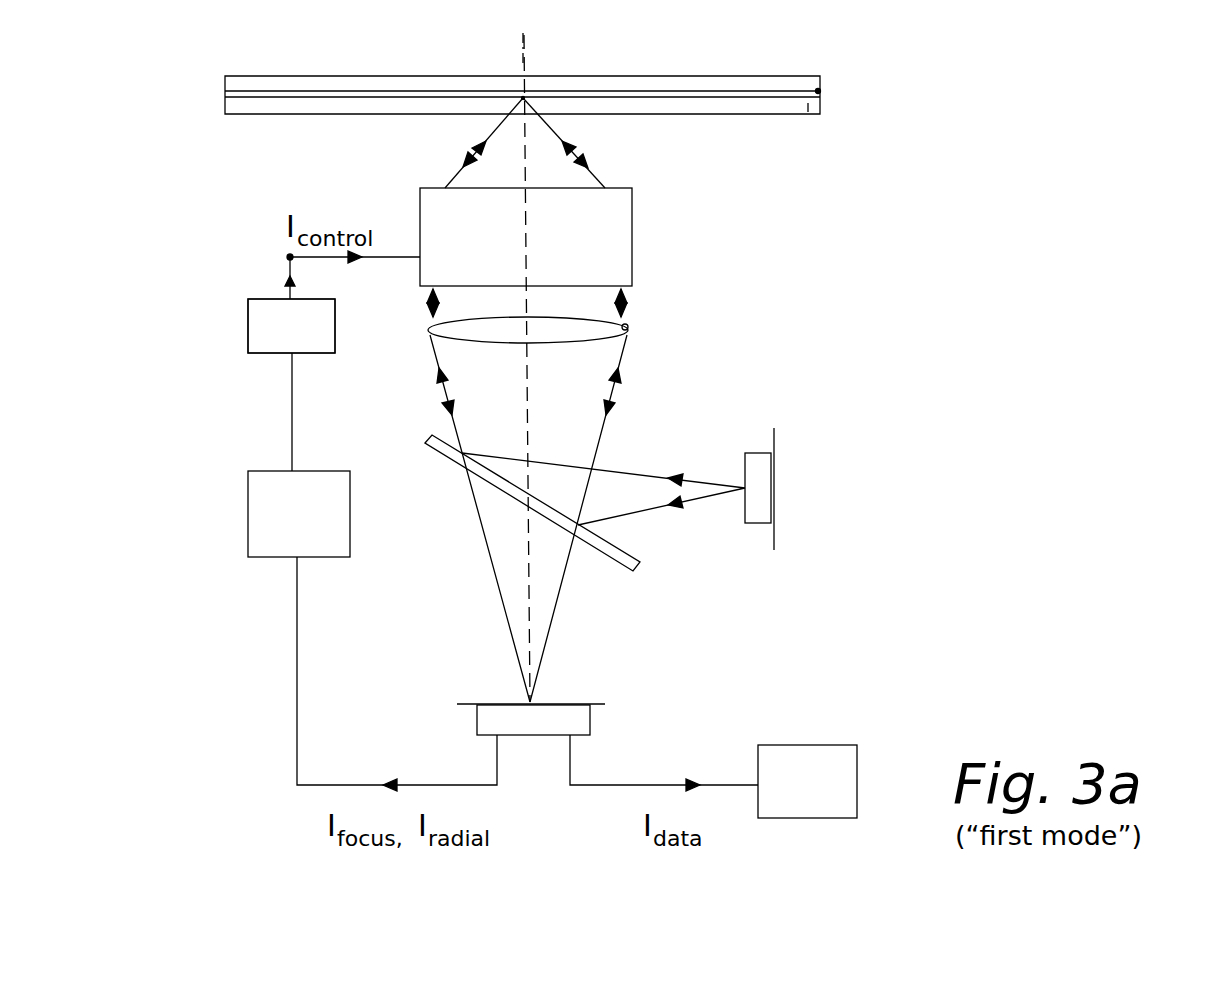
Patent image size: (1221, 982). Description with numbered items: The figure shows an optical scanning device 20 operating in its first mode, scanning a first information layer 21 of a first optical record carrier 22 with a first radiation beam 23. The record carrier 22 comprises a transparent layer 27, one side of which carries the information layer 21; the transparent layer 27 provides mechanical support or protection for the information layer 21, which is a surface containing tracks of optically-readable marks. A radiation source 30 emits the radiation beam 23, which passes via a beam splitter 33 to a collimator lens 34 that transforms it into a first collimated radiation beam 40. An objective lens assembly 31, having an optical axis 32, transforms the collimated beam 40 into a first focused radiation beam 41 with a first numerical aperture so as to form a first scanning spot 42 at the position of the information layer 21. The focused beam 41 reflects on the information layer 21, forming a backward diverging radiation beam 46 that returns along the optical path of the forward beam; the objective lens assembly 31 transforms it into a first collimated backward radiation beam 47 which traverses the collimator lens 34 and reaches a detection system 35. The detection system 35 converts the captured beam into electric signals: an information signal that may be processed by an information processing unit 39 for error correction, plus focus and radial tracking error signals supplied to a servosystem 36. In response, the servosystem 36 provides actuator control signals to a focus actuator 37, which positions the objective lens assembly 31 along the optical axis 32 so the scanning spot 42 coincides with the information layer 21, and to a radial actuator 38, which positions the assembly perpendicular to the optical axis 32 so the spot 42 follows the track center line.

The optical scanning device 20 is at (1035, 247).
The first information layer 21 is at (819, 91).
The first optical record carrier 22 is at (690, 64).
The first radiation beam 23 is at (690, 482).
The transparent layer 27 is at (807, 104).
The radiation source 30 is at (757, 524).
The objective lens assembly 31 is at (633, 197).
The optical axis 32 is at (522, 50).
The beam splitter 33 is at (430, 447).
The collimator lens 34 is at (628, 331).
The detection system 35 is at (460, 703).
The servosystem 36 is at (248, 525).
The focus actuator 37 is at (248, 326).
The radial actuator 38 is at (291, 326).
The information processing unit 39 is at (808, 745).
The first collimated radiation beam 40 is at (630, 291).
The first focused radiation beam 41 is at (484, 139).
The first scanning spot 42 is at (526, 96).
The backward diverging radiation beam 46 is at (592, 162).
The first collimated backward radiation beam 47 is at (630, 316).